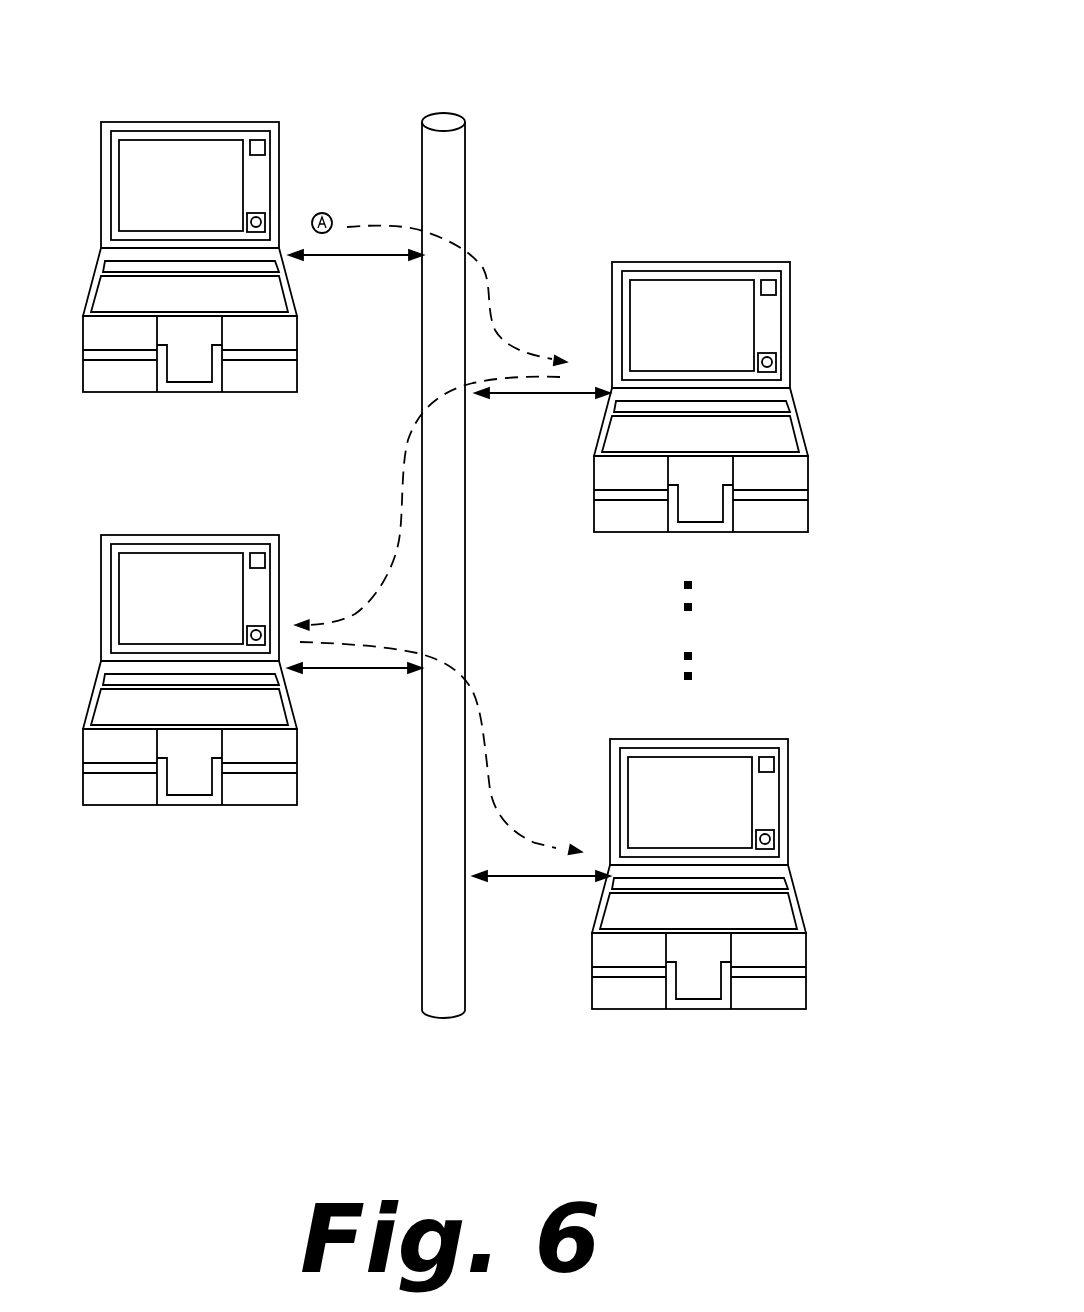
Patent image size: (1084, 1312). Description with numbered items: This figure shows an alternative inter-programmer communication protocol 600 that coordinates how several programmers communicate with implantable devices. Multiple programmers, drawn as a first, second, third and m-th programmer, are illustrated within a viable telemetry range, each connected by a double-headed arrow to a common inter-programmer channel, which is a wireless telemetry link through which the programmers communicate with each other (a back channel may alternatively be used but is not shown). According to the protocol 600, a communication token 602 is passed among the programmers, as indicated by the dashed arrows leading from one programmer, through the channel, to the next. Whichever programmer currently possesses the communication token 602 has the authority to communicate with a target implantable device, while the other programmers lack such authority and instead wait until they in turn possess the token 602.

The inter-programmer communication protocol 600 is at (668, 44).
The communication token 602 is at (322, 212).